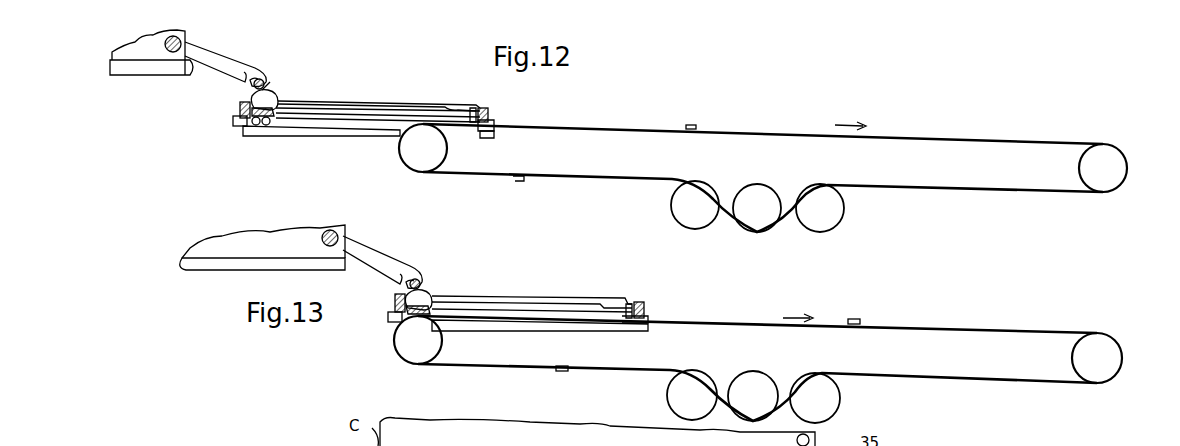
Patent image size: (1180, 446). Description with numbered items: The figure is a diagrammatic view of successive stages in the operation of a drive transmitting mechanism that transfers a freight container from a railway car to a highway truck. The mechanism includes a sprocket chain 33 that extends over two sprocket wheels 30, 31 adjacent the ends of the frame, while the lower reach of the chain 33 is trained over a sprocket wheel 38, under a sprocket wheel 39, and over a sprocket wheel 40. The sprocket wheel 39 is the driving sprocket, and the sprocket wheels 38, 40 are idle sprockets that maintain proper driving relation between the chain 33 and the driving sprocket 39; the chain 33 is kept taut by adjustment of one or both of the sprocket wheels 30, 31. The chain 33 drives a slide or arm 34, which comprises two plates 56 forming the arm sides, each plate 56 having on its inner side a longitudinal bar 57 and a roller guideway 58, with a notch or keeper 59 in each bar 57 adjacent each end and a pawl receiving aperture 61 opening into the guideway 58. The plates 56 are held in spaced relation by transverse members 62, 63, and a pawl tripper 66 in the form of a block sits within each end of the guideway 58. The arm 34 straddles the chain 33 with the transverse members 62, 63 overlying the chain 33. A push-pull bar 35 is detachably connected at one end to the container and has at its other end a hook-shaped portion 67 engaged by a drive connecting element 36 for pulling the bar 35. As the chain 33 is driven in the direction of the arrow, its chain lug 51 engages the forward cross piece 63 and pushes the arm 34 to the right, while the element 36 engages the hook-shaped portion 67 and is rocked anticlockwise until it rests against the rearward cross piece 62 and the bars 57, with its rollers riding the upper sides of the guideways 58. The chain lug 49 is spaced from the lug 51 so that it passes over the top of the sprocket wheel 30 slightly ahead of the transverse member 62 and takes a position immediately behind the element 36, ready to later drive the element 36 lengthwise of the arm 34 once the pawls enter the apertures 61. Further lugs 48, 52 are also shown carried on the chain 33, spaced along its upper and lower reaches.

In FIG. 12, the sprocket wheel 30 is at (429, 164).
In FIG. 13, the sprocket wheel 30 is at (432, 342).
In FIG. 12, the sprocket wheel 31 is at (1112, 160).
In FIG. 13, the sprocket wheel 31 is at (1097, 340).
In FIG. 12, the sprocket chain 33 is at (905, 145).
In FIG. 13, the sprocket chain 33 is at (996, 339).
In FIG. 12, the arm 34 is at (316, 132).
In FIG. 13, the arm 34 is at (592, 331).
In FIG. 12, the push-pull bar 35 is at (225, 62).
In FIG. 13, the push-pull bar 35 is at (388, 256).
In FIG. 12, the drive connecting element 36 is at (274, 92).
In FIG. 13, the drive connecting element 36 is at (438, 292).
In FIG. 12, the sprocket wheel 38 is at (671, 205).
In FIG. 13, the sprocket wheel 38 is at (670, 385).
In FIG. 12, the sprocket wheel 39 is at (774, 222).
In FIG. 13, the sprocket wheel 39 is at (752, 382).
In FIG. 12, the sprocket wheel 40 is at (832, 218).
In FIG. 13, the sprocket wheel 40 is at (832, 394).
In FIG. 12, the belt cleat 48 is at (720, 204).
In FIG. 13, the belt cleat 48 is at (556, 370).
In FIG. 12, the chain lug 49 is at (524, 181).
In FIG. 13, the chain lug 49 is at (394, 324).
In FIG. 12, the chain lug 51 is at (472, 110).
In FIG. 13, the chain lug 51 is at (628, 304).
In FIG. 12, the belt cleat 52 is at (691, 125).
In FIG. 13, the belt cleat 52 is at (858, 319).
In FIG. 12, the plate 56 is at (410, 108).
In FIG. 12, the bar 57 is at (322, 110).
In FIG. 12, the roller guideway 58 is at (367, 110).
In FIG. 12, the keeper 59 is at (268, 118).
In FIG. 12, the pawl receiving aperture 61 is at (256, 125).
In FIG. 12, the transverse member 62 is at (240, 106).
In FIG. 13, the transverse member 62 is at (395, 298).
In FIG. 12, the transverse member 63 is at (488, 112).
In FIG. 13, the transverse member 63 is at (646, 308).
In FIG. 12, the pawl tripper 66 is at (233, 121).
In FIG. 12, the hook-shaped portion 67 is at (270, 82).